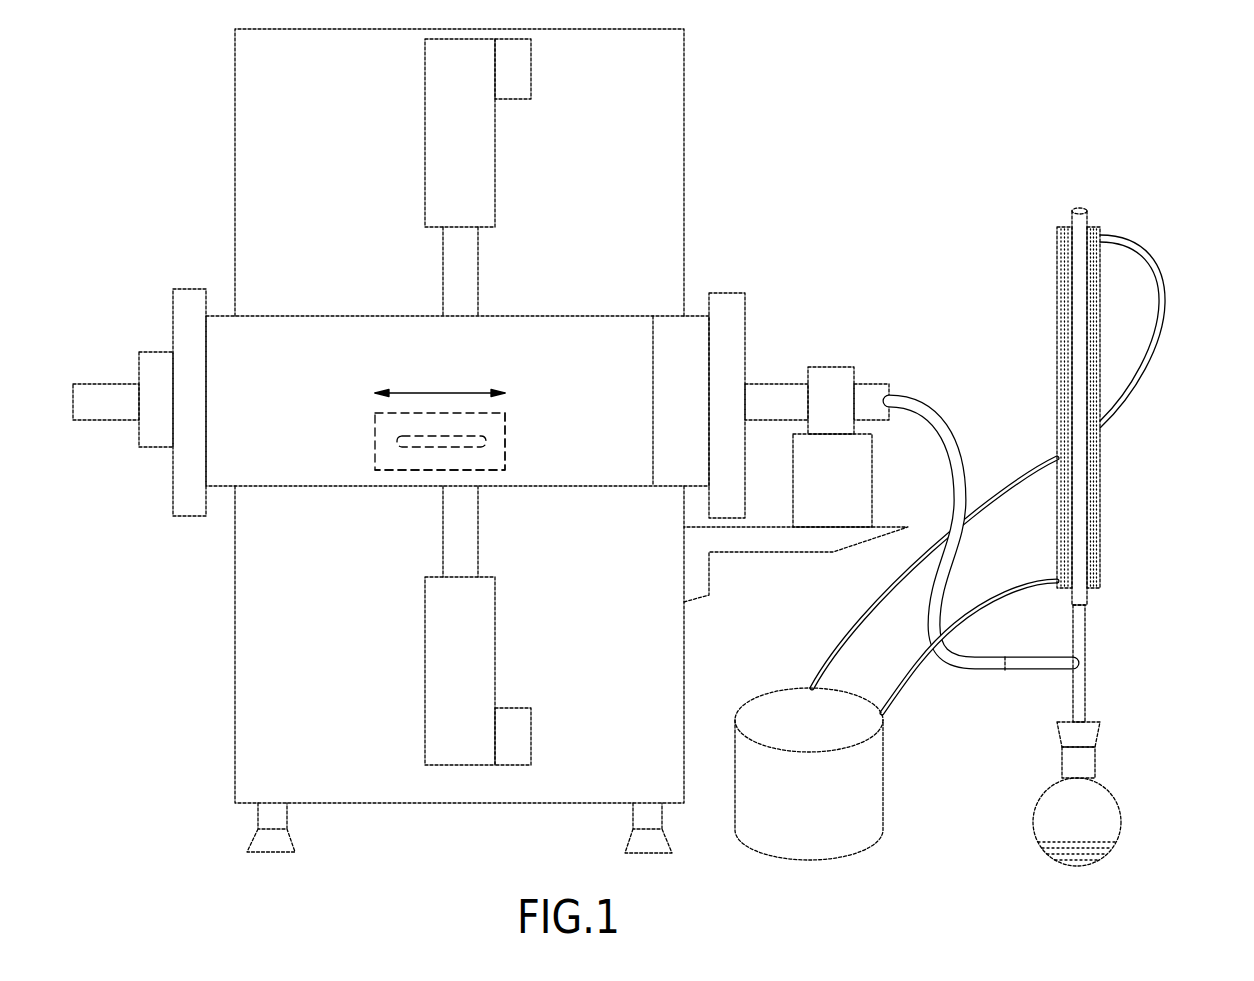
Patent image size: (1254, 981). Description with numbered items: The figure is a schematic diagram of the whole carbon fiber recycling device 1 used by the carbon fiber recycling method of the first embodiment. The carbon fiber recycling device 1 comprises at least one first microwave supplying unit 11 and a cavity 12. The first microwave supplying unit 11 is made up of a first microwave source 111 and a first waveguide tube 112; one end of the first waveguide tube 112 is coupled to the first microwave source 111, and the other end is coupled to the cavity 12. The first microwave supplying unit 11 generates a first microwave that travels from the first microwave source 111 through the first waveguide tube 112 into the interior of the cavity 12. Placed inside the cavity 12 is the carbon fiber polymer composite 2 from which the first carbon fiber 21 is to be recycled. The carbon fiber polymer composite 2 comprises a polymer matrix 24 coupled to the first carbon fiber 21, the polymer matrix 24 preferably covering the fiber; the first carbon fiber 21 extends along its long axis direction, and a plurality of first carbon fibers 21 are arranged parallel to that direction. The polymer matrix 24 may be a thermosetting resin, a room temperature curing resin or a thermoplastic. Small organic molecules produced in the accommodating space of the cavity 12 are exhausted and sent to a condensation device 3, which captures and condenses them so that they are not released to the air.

The carbon fiber recycling device 1 is at (482, 433).
The first microwave supplying unit 11 is at (294, 625).
The first microwave source 111 is at (425, 690).
The first waveguide tube 112 is at (442, 532).
The cavity 12 is at (367, 315).
The carbon fiber polymer composite 2 is at (433, 416).
The first carbon fiber 21 is at (427, 447).
The polymer matrix 24 is at (493, 458).
The condensation device 3 is at (1179, 246).